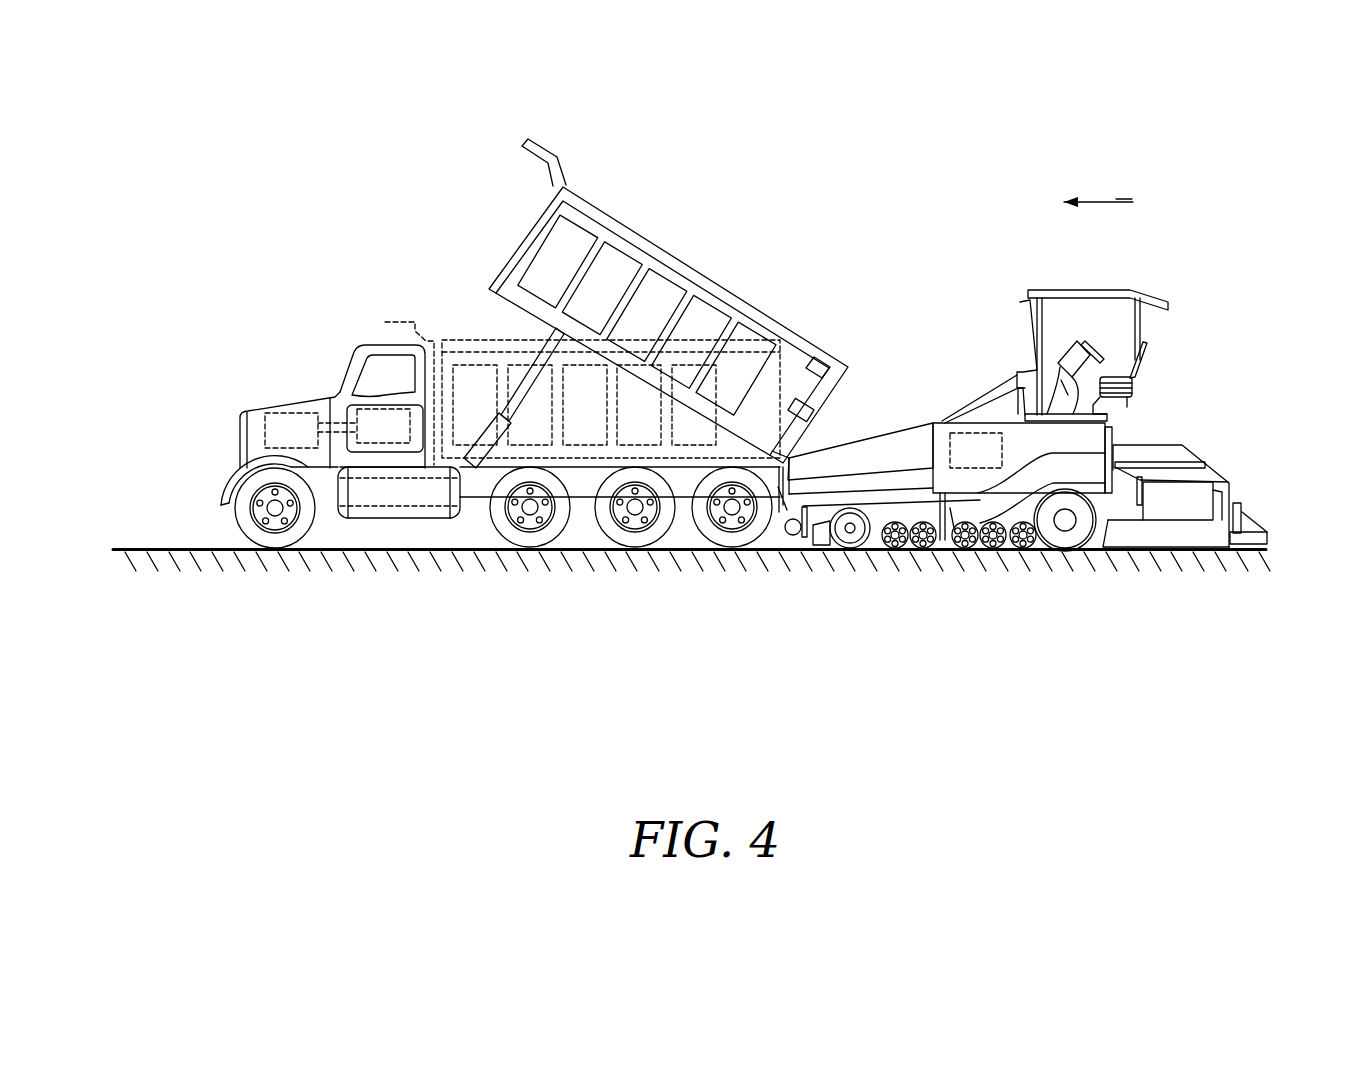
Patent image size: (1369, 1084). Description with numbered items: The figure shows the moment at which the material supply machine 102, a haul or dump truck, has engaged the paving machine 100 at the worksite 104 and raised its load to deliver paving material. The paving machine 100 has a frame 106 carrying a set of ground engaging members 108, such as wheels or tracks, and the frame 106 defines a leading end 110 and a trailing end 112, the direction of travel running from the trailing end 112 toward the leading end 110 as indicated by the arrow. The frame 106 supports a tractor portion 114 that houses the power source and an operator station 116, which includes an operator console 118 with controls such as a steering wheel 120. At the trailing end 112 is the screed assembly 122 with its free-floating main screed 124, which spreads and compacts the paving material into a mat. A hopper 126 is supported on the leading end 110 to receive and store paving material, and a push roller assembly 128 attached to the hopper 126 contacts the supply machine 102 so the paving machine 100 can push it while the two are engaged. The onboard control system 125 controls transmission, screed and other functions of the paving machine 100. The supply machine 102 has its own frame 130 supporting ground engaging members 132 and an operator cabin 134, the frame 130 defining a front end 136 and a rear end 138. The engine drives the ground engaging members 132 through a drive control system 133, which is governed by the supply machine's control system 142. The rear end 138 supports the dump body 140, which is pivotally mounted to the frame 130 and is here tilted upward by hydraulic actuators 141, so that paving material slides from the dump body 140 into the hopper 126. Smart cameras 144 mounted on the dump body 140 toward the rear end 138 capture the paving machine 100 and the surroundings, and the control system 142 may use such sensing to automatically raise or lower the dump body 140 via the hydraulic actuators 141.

The paving machine 100 is at (1220, 262).
The material supply machine 102 is at (328, 352).
The worksite 104 is at (133, 548).
The frame 106 is at (952, 510).
The ground engaging members 108 is at (833, 550).
The leading end 110 is at (797, 446).
The trailing end 112 is at (1203, 450).
The tractor portion 114 is at (1021, 347).
The operator station 116 is at (1152, 353).
The operator console 118 is at (1080, 330).
The steering wheel 120 is at (1100, 345).
The screed assembly 122 is at (1250, 513).
The main screed 124 is at (1241, 526).
The control system 125 is at (962, 464).
The hopper 126 is at (887, 430).
The push roller assembly 128 is at (775, 534).
The frame 130 is at (475, 487).
The ground engaging members 132 is at (307, 535).
The drive control system 133 is at (276, 443).
The operator cabin 134 is at (367, 344).
The front end 136 is at (236, 432).
The rear end 138 is at (838, 403).
The dump body 140 is at (710, 290).
The hydraulic actuators 141 is at (490, 418).
The control system 142 is at (368, 439).
The smart cameras 144 is at (831, 410).